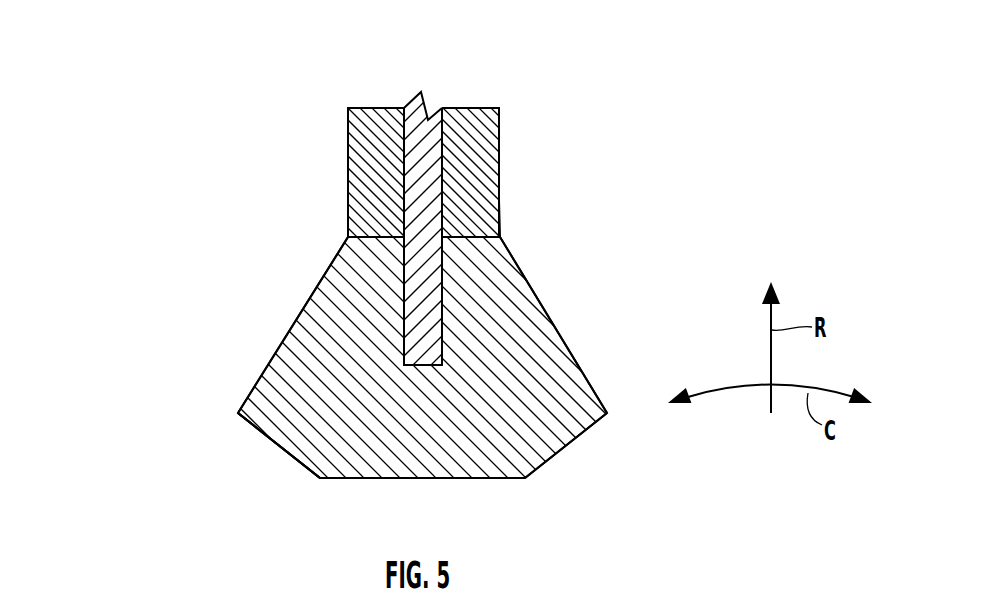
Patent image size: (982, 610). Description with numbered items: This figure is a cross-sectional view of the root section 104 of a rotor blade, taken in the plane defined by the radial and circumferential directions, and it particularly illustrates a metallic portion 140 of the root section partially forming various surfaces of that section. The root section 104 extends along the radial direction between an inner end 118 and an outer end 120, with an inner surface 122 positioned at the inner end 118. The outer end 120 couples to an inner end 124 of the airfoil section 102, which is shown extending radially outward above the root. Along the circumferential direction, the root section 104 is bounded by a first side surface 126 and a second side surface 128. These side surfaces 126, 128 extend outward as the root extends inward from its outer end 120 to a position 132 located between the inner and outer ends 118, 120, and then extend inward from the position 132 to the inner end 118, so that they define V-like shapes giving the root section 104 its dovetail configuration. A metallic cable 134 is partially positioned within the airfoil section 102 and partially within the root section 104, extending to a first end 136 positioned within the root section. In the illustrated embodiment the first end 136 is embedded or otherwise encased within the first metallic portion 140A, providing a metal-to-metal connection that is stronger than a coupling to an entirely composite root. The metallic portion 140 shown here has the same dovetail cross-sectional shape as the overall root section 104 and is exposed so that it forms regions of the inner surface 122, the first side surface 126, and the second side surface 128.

The root section 104 is at (160, 179).
The airfoil section 102 is at (348, 142).
The metallic cable 134 is at (432, 109).
The inner end 118 is at (300, 514).
The outer end 120 is at (315, 234).
The inner end of the airfoil section 124 is at (513, 214).
The first side surface 126 is at (578, 352).
The second side surface 128 is at (290, 330).
The position 132 is at (211, 384).
The first end of the metallic cable 136 is at (462, 416).
The metallic portion 140 is at (285, 452).
The first metallic portion 140A is at (279, 445).
The inner surface 122 is at (425, 478).